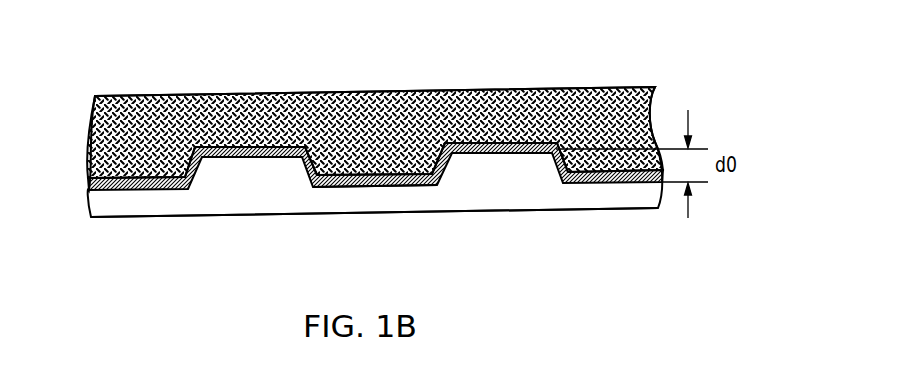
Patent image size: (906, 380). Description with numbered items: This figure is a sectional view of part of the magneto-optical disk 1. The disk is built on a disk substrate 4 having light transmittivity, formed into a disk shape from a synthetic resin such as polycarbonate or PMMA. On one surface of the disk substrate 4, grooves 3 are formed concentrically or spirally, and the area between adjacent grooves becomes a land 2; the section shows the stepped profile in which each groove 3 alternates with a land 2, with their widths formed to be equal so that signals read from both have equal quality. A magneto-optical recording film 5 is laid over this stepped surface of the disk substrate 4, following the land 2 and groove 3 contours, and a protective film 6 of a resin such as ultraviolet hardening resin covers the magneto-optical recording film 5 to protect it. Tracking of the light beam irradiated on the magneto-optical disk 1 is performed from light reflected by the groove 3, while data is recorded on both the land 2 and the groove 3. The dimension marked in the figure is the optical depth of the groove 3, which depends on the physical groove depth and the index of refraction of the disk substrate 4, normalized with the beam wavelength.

The magneto-optical disk 1 is at (401, 46).
The land 2 is at (381, 186).
The groove 3 is at (502, 154).
The disk substrate 4 is at (375, 114).
The magneto-optical recording film 5 is at (138, 190).
The protective film 6 is at (267, 203).